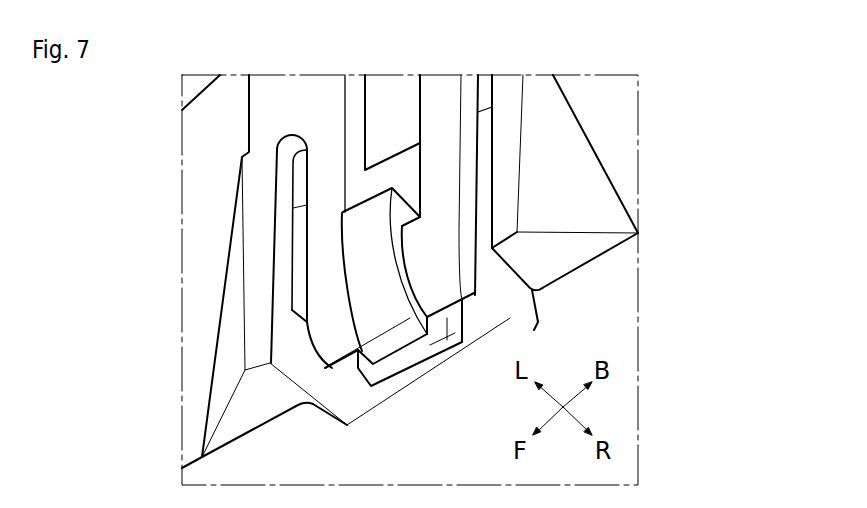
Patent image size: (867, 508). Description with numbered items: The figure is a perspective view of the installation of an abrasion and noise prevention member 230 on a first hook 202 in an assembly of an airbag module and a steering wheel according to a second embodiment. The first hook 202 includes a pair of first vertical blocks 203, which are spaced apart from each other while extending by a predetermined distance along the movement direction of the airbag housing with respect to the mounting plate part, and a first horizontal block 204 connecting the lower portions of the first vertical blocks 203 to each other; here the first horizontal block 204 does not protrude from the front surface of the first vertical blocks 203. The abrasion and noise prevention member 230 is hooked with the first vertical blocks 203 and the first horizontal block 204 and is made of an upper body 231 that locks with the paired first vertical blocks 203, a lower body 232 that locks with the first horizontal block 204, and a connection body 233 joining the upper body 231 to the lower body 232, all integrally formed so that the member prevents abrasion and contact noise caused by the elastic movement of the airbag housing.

The first hook 202 is at (96, 180).
The first vertical blocks 203 is at (323, 180).
The first horizontal block 204 is at (323, 303).
The abrasion and noise prevention member 230 is at (719, 145).
The upper body 231 is at (397, 205).
The lower body 232 is at (462, 326).
The connection body 233 is at (402, 260).